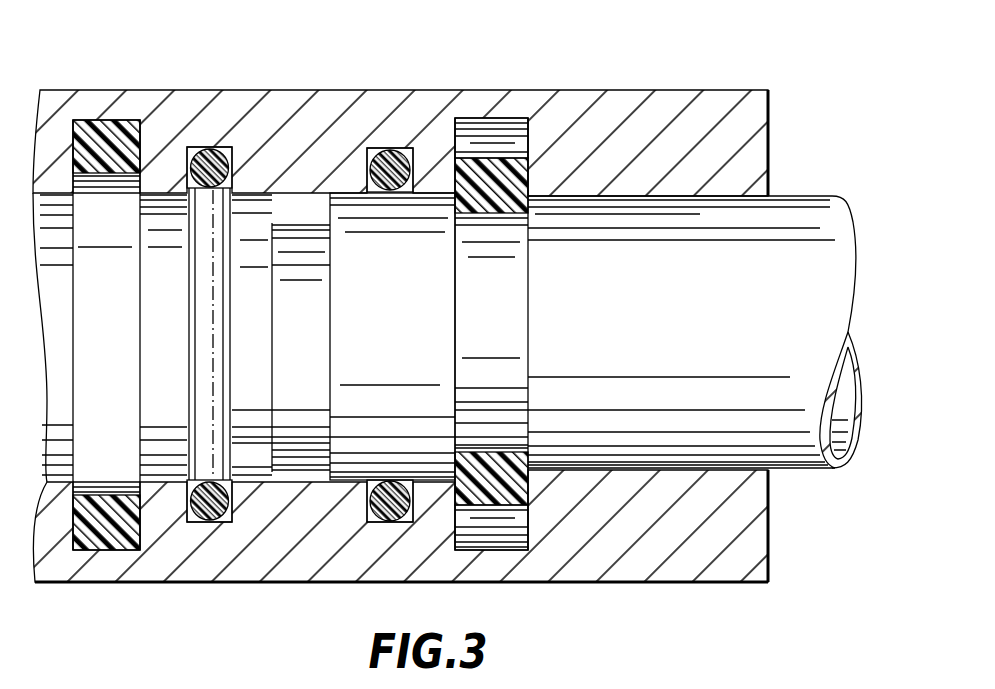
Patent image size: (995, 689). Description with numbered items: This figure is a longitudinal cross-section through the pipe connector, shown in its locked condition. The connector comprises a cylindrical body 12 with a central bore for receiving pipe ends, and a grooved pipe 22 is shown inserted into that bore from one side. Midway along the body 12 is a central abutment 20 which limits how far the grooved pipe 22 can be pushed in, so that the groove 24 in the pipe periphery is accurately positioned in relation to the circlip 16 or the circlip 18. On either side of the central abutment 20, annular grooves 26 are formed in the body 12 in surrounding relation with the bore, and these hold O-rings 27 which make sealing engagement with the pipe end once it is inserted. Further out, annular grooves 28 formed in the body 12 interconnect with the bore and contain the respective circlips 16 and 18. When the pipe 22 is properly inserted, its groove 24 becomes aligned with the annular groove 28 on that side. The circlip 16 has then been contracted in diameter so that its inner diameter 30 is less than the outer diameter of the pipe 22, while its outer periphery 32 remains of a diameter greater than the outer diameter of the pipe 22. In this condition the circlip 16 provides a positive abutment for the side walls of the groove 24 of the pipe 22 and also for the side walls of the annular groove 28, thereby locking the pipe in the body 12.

The cylindrical body 12 is at (355, 113).
The circlip 16 is at (520, 172).
The circlip 18 is at (109, 133).
The central abutment 20 is at (299, 223).
The grooved pipe 22 is at (780, 233).
The groove 24 is at (513, 383).
The annular grooves 26 is at (201, 148).
The O-rings 27 is at (219, 150).
The annular grooves 28 is at (123, 550).
The inner diameter 30 is at (113, 178).
The outer periphery 32 is at (490, 158).